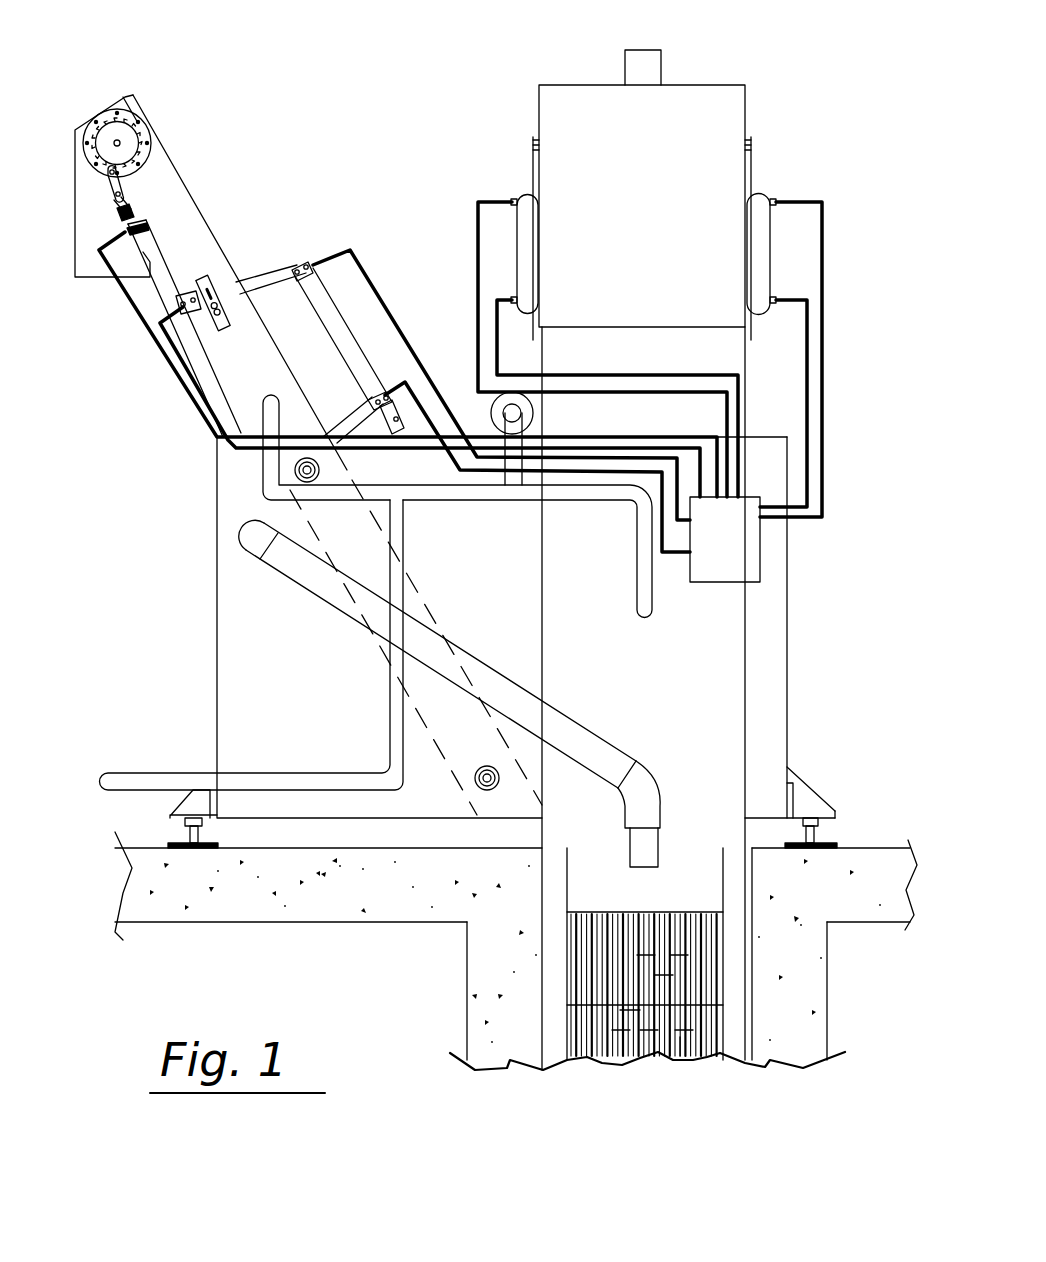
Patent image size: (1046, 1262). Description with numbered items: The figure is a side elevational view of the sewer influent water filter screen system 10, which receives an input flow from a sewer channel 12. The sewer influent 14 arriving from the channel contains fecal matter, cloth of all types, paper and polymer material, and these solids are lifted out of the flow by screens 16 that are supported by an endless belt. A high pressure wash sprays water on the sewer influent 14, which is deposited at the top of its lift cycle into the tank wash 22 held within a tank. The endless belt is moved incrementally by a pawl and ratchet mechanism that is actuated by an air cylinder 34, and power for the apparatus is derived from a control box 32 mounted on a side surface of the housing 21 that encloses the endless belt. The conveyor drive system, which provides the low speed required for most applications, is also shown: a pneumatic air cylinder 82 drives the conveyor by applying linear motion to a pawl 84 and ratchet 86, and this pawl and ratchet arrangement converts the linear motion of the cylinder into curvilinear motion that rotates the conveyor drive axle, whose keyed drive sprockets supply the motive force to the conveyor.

The sewer influent water filter screen system 10 is at (340, 76).
The sewer channel 12 is at (752, 996).
The sewer influent 14 is at (587, 1003).
The screens 16 is at (680, 1037).
The housing 21 is at (747, 648).
The tank wash 22 is at (800, 611).
The control box 32 is at (760, 548).
The air cylinder 34 is at (525, 240).
The pneumatic air cylinder 82 is at (165, 247).
The pawl 84 is at (107, 185).
The ratchet 86 is at (142, 140).